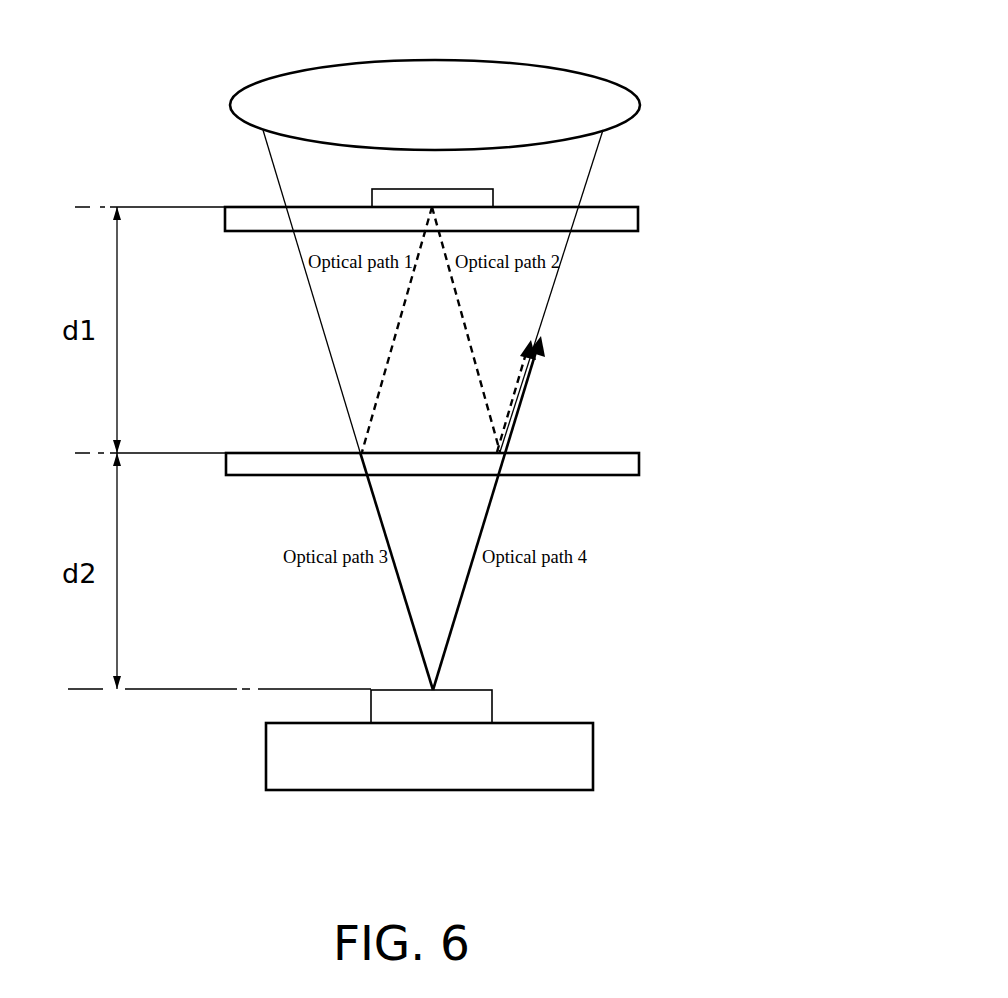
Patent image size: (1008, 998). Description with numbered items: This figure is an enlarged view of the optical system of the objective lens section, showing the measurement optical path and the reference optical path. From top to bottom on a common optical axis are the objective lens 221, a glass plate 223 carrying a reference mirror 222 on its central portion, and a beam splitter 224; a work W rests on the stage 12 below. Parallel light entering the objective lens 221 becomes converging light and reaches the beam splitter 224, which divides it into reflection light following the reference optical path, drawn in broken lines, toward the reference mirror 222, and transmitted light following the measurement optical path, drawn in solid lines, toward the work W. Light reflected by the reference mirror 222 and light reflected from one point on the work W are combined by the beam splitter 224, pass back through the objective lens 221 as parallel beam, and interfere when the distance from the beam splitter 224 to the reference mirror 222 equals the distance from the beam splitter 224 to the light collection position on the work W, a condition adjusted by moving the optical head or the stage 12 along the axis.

The objective lens 221 is at (513, 62).
The reference mirror 222 is at (493, 189).
The glass plate 223 is at (638, 211).
The beam splitter 224 is at (630, 453).
The work W is at (492, 690).
The stage 12 is at (577, 723).